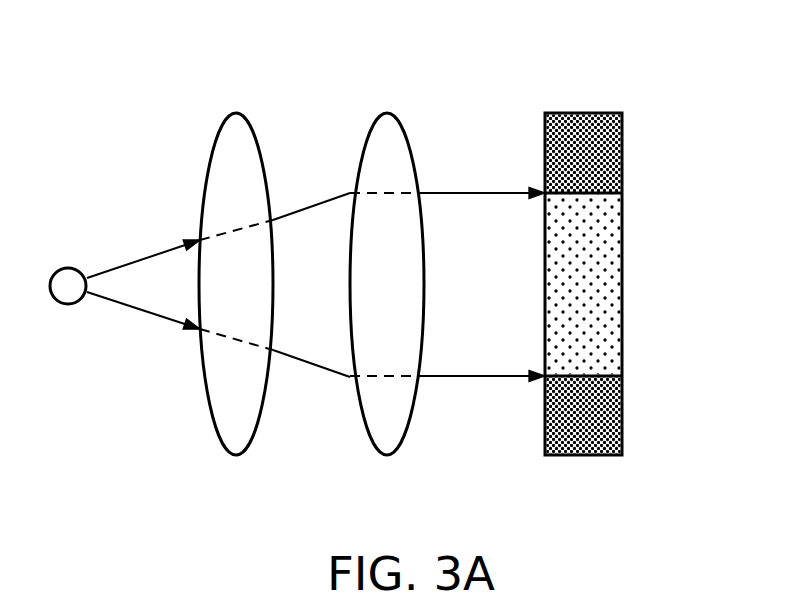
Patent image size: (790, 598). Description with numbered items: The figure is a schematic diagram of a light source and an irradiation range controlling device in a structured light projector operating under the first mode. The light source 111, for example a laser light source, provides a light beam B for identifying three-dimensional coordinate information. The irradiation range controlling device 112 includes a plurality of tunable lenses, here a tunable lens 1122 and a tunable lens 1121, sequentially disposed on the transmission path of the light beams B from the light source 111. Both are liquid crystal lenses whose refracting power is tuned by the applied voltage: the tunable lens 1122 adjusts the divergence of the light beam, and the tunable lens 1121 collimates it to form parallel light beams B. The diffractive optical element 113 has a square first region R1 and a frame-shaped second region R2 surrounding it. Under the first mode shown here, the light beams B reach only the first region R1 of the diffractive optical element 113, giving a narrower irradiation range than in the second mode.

The light source 111 is at (68, 268).
The irradiation range controlling device 112 is at (311, 228).
The tunable lens 1122 is at (240, 118).
The tunable lens 1121 is at (386, 251).
The diffractive optical element 113 is at (617, 247).
The light beam B is at (141, 259).
The first region R1 is at (602, 298).
The second region R2 is at (602, 151).